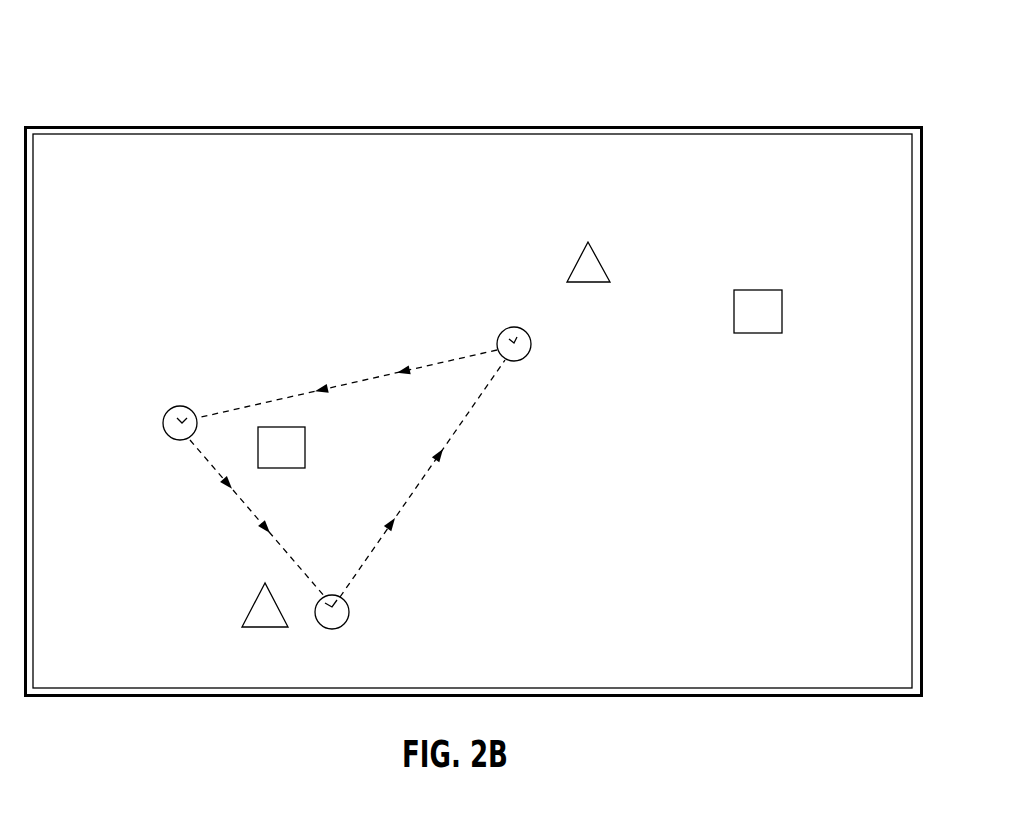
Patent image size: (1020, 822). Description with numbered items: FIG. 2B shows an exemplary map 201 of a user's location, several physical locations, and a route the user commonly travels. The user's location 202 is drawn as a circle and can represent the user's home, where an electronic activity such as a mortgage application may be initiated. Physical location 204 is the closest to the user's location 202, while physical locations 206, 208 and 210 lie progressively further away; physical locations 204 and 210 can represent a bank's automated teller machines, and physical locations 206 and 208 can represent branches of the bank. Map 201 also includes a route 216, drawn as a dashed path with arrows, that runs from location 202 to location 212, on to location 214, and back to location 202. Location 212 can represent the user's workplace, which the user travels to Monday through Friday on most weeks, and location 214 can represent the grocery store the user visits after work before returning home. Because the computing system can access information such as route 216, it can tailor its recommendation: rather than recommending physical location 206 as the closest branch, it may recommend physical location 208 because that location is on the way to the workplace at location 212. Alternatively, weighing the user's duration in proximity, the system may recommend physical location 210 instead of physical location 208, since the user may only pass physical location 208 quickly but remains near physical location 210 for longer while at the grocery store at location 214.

The map 201 is at (112, 58).
The user's location 202 is at (503, 331).
The physical location 204 is at (598, 262).
The physical location 206 is at (757, 289).
The physical location 208 is at (283, 469).
The physical location 210 is at (278, 606).
The location 212 is at (171, 409).
The location 214 is at (345, 625).
The route 216 is at (345, 372).